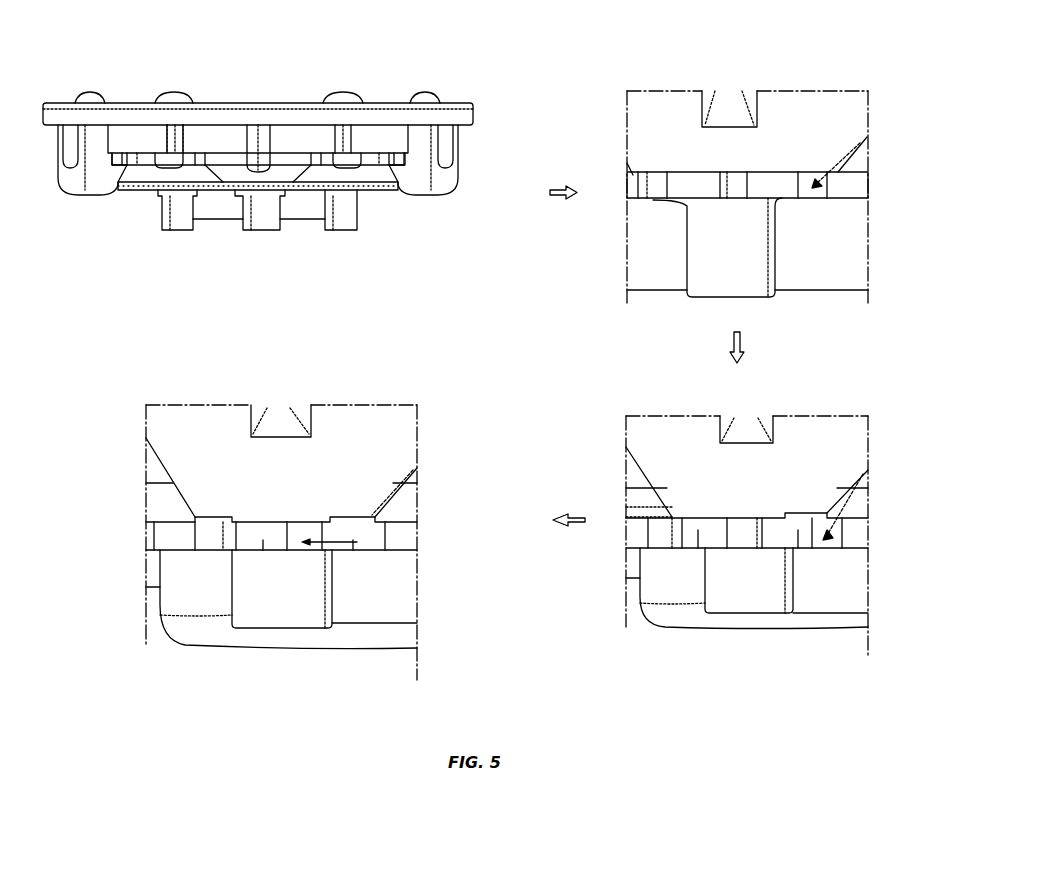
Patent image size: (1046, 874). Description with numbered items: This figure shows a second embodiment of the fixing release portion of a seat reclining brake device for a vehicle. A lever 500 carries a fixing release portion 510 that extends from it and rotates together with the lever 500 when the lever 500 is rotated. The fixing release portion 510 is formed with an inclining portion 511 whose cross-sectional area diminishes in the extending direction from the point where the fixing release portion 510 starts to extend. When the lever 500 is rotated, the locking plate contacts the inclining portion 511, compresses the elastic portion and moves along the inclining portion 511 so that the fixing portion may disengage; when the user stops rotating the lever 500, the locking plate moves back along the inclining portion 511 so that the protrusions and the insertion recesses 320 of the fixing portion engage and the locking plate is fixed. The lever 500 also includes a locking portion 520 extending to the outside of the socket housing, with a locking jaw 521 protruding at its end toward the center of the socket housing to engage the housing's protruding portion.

The lever 500 is at (393, 85).
The fixing release portion 510 is at (355, 216).
The inclining portion 511 is at (867, 137).
The locking portion 520 is at (460, 160).
The locking jaw 521 is at (405, 177).
The insertion recesses 320 is at (263, 542).